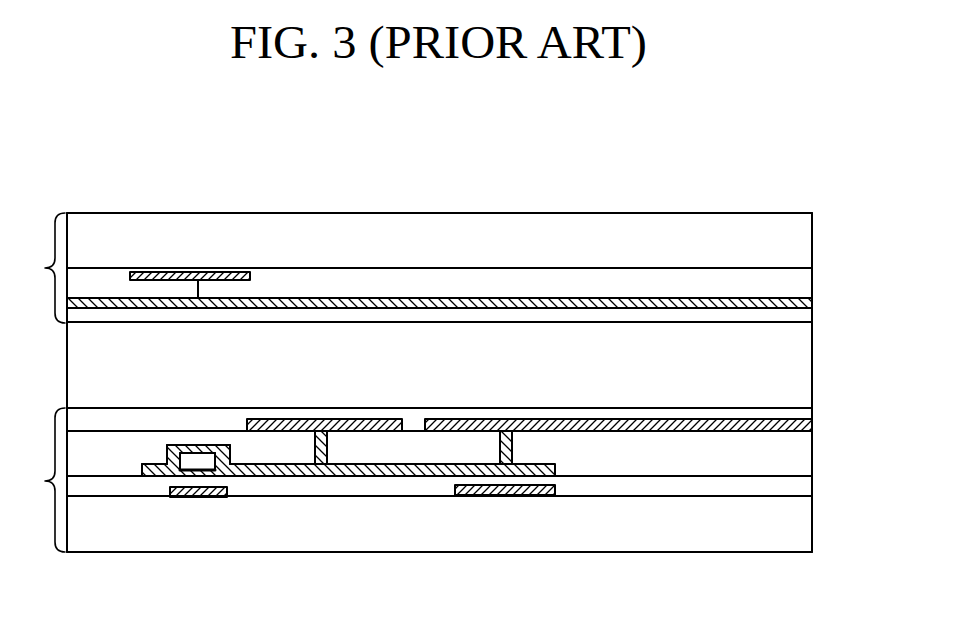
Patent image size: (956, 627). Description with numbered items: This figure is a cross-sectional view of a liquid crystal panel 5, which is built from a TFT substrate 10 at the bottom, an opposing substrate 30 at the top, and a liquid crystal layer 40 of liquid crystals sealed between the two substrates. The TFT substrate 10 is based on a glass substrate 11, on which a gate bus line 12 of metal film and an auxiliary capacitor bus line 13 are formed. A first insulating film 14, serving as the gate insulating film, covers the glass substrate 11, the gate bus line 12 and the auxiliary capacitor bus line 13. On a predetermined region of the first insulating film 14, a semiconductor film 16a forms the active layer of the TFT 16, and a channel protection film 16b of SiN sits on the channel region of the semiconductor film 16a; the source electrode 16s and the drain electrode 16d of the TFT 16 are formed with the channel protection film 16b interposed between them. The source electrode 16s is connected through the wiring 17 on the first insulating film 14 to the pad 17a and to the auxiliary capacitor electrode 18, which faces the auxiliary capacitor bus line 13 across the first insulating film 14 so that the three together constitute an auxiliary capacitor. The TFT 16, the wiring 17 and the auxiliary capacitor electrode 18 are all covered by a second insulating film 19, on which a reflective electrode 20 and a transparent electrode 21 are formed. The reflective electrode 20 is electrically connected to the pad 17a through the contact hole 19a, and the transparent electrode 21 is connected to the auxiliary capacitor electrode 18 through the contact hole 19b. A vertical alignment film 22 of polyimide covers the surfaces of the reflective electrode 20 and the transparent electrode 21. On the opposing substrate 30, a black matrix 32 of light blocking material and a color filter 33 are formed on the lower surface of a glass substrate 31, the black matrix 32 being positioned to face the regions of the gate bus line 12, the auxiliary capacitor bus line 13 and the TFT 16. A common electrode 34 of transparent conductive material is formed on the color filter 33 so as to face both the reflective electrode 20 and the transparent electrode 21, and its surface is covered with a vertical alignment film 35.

The liquid crystal panel 5 is at (769, 198).
The TFT substrate 10 is at (40, 480).
The glass substrate 11 is at (699, 540).
The gate bus line 12 is at (198, 497).
The auxiliary capacitor bus line 13 is at (507, 496).
The first insulating film 14 is at (798, 484).
The TFT 16 is at (152, 455).
The semiconductor film 16a is at (188, 471).
The channel protection film 16b is at (198, 462).
The drain electrode 16d is at (142, 472).
The source electrode 16s is at (267, 477).
The wiring 17 is at (392, 476).
The pad 17a is at (322, 476).
The auxiliary capacitor electrode 18 is at (549, 476).
The second insulating film 19 is at (798, 449).
The contact hole 19a is at (314, 419).
The contact hole 19b is at (505, 431).
The reflective electrode 20 is at (371, 419).
The transparent electrode 21 is at (707, 418).
The vertical alignment film 22 is at (610, 418).
The opposing substrate 30 is at (39, 268).
The glass substrate 31 is at (693, 222).
The black matrix 32 is at (217, 272).
The color filter 33 is at (800, 288).
The common electrode 34 is at (800, 303).
The vertical alignment film 35 is at (448, 323).
The liquid crystal layer 40 is at (77, 366).